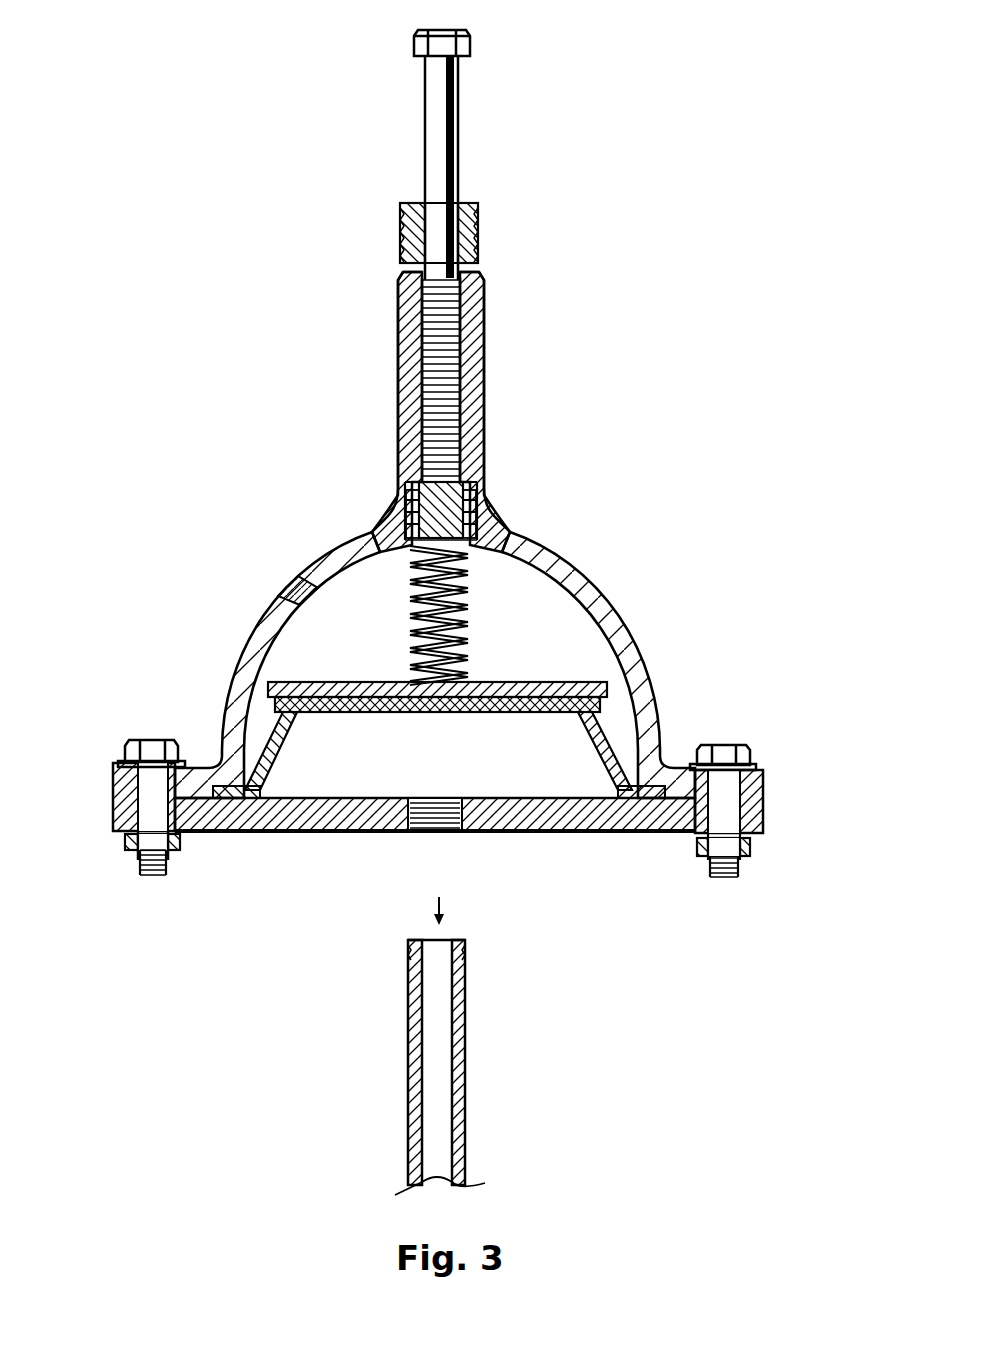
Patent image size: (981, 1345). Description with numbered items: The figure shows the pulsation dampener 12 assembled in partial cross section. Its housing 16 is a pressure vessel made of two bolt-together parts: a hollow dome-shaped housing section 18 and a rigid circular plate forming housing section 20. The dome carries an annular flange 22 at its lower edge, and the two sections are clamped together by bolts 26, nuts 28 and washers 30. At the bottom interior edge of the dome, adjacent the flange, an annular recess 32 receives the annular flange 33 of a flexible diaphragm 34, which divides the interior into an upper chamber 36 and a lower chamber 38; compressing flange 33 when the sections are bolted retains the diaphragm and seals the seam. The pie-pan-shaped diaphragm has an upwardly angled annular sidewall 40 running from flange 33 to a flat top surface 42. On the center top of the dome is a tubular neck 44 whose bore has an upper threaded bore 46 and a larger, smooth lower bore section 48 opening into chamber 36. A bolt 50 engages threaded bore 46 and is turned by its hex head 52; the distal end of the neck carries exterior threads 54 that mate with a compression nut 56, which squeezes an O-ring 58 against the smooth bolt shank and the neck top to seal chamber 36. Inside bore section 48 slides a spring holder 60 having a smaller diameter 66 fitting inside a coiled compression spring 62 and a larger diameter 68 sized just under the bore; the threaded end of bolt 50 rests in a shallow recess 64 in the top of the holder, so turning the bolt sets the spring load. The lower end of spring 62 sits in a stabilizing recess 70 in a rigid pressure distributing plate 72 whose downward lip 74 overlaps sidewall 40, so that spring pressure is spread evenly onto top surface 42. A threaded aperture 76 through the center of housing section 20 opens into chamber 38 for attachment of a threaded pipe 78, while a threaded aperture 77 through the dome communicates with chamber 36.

The pulsation dampener 12 is at (350, 136).
The housing 16 is at (565, 558).
The housing section 18 is at (603, 593).
The housing section 20 is at (765, 825).
The annular flange 22 is at (765, 778).
The bolts 26 is at (150, 742).
The nuts 28 is at (128, 848).
The washers 30 is at (113, 818).
The annular recess 32 is at (640, 742).
The annular flange 33 is at (668, 768).
The diaphragm 34 is at (615, 728).
The chamber 36 is at (298, 632).
The chamber 38 is at (408, 762).
The annular sidewall 40 is at (265, 740).
The flat top surface 42 is at (585, 722).
The neck 44 is at (485, 300).
The threaded bore 46 is at (456, 370).
The bore section 48 is at (477, 490).
The bolt 50 is at (458, 100).
The hex head 52 is at (470, 38).
The exterior threads 54 is at (432, 215).
The compression nut 56 is at (402, 215).
The O-ring 58 is at (478, 212).
The spring holder 60 is at (463, 504).
The compression spring 62 is at (462, 590).
The recess 64 is at (466, 480).
The smaller diameter 66 is at (408, 528).
The larger diameter 68 is at (410, 498).
The stabilizing recess 70 is at (478, 683).
The pressure distributing plate 72 is at (305, 680).
The lip 74 is at (273, 703).
The aperture 76 is at (443, 833).
The aperture 77 is at (290, 578).
The threaded pipe 78 is at (465, 1095).